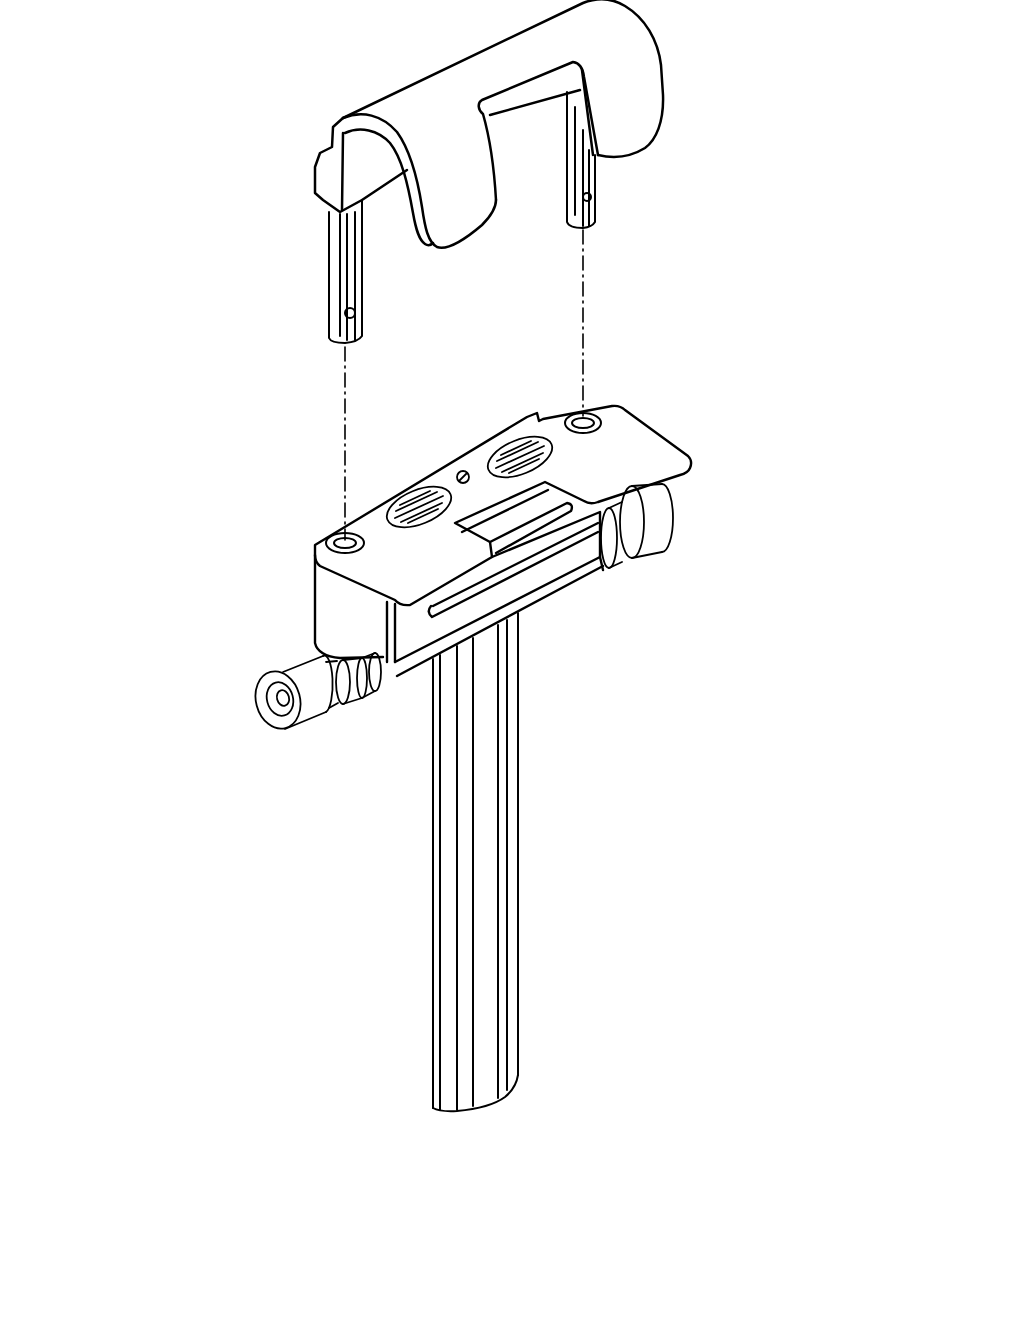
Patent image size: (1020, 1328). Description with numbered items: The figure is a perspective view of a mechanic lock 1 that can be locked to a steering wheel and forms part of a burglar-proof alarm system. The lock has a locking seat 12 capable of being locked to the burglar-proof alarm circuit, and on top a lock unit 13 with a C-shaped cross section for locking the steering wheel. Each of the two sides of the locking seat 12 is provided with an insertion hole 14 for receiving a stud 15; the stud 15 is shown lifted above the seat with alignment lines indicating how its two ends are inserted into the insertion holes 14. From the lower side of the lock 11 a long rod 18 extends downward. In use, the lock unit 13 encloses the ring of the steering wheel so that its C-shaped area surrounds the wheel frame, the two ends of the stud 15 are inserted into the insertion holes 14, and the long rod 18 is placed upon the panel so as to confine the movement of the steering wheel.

The lock 1 is at (209, 400).
The lock 11 is at (507, 613).
The locking seat 12 is at (533, 542).
The lock unit 13 is at (417, 92).
The insertion hole 14 is at (337, 540).
The stud 15 is at (334, 291).
The long rod 18 is at (488, 828).